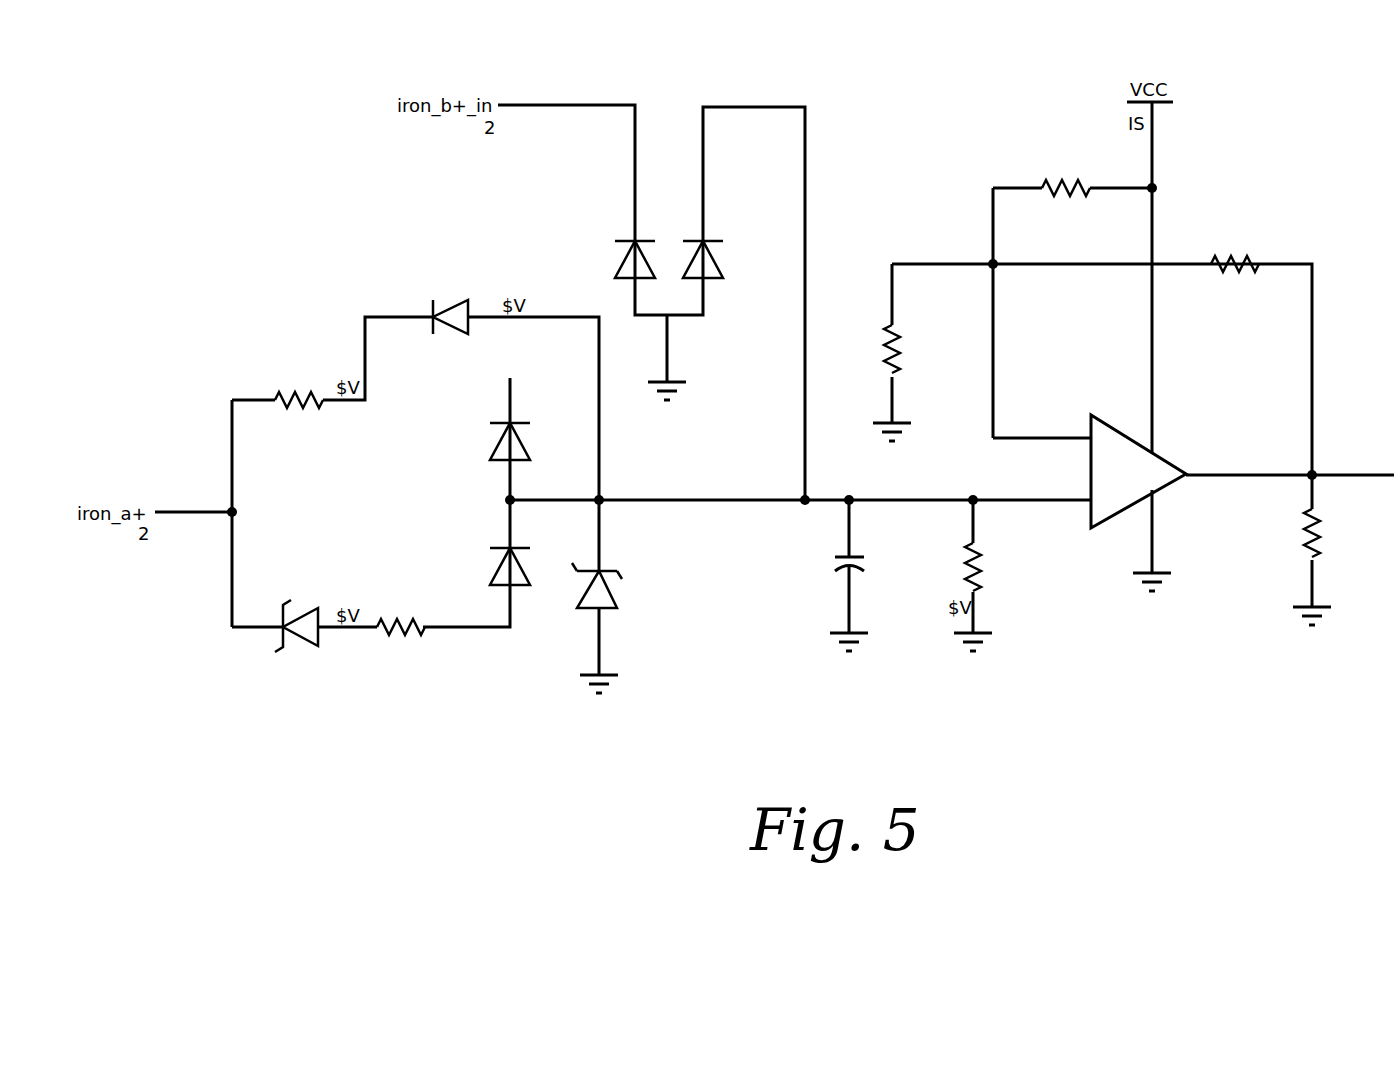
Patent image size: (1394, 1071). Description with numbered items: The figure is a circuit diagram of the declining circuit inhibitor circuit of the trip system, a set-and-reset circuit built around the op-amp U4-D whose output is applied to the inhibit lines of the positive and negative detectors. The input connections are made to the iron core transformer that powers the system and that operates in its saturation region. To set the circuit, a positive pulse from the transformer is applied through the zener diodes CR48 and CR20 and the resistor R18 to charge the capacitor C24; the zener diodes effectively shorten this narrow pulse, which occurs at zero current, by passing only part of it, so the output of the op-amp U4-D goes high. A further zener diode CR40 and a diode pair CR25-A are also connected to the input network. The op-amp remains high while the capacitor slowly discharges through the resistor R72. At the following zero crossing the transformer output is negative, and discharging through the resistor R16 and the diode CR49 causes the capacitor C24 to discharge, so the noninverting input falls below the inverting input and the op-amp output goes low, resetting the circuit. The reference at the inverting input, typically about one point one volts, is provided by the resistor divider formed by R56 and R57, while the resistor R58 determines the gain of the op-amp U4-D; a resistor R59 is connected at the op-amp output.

The resistor R16 is at (299, 399).
The resistor R18 is at (405, 675).
The diode CR49 is at (447, 289).
The zener diode CR48 is at (276, 663).
The zener diode CR20 is at (467, 504).
The zener diode CR40 is at (655, 586).
The diode CR25-A is at (708, 273).
The resistor R57 is at (926, 363).
The resistor R56 is at (1067, 190).
The resistor R58 is at (1235, 265).
The resistor R59 is at (1344, 544).
The capacitor C24 is at (890, 575).
The resistor R72 is at (1003, 575).
The op-amp U4-D is at (1152, 467).